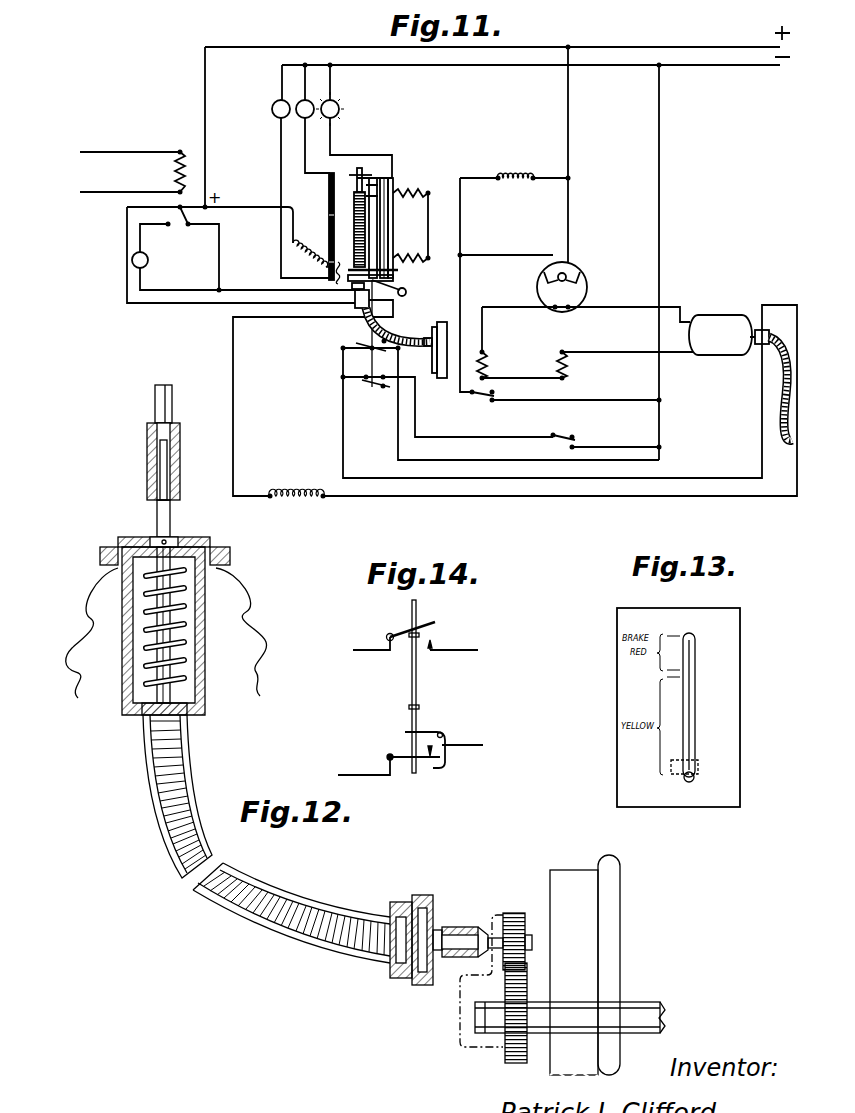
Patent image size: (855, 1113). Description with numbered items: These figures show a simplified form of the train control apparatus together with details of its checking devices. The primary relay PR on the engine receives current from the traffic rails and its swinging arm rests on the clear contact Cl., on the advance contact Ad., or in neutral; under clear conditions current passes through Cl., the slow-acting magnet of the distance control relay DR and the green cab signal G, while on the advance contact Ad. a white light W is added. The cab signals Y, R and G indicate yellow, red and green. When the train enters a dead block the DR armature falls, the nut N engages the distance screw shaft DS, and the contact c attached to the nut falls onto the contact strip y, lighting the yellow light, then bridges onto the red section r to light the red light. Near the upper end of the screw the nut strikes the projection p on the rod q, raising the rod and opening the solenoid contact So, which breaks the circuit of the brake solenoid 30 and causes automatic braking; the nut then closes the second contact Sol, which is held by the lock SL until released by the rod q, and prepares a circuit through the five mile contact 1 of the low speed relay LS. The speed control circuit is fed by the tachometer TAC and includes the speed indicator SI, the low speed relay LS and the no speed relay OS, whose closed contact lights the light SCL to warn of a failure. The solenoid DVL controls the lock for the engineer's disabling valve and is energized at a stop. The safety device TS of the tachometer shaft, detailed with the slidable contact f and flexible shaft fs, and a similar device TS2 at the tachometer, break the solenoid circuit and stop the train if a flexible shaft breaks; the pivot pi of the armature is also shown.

In FIG. 11, the primary relay PR is at (132, 172).
In FIG. 11, the yellow cab signal Y is at (301, 171).
In FIG. 11, the red cab signal R is at (313, 119).
In FIG. 11, the green cab signal G is at (354, 121).
In FIG. 11, the advance signal contact Ad. is at (250, 249).
In FIG. 11, the clear contact Cl. is at (199, 248).
In FIG. 11, the white light W is at (140, 260).
In FIG. 11, the red section of contact strip r is at (328, 192).
In FIG. 11, the contact strip y is at (328, 238).
In FIG. 11, the distance screw shaft DS is at (353, 217).
In FIG. 11, the projection p is at (373, 192).
In FIG. 11, the distance control relay DR is at (412, 225).
In FIG. 11, the contact c is at (341, 262).
In FIG. 11, the nut N is at (398, 270).
In FIG. 11, the pivot pi is at (401, 294).
In FIG. 11, the safety device of tachometer shaft TS is at (355, 300).
In FIG. 11, the tachometer shaft safety device TS2 is at (757, 346).
In FIG. 11, the rod q is at (380, 326).
In FIG. 14, the rod q is at (418, 685).
In FIG. 11, the solenoid contact So is at (494, 393).
In FIG. 14, the solenoid contact So is at (415, 631).
In FIG. 11, the solenoid contact SO1 Sol is at (560, 400).
In FIG. 14, the solenoid contact SO1 Sol is at (389, 754).
In FIG. 11, the brake solenoid 30 is at (297, 485).
In FIG. 11, the disabling valve lock solenoid DVL is at (514, 219).
In FIG. 11, the speed control light SCL is at (577, 285).
In FIG. 11, the speed indicator SI is at (586, 304).
In FIG. 11, the no speed relay OS is at (519, 344).
In FIG. 11, the low speed relay LS is at (618, 355).
In FIG. 11, the tachometer TAC is at (729, 324).
In FIG. 11, the contact 1 is at (605, 431).
In FIG. 12, the slidable contact f is at (145, 540).
In FIG. 12, the flexible shaft fs is at (178, 640).
In FIG. 14, the lock SL is at (444, 750).